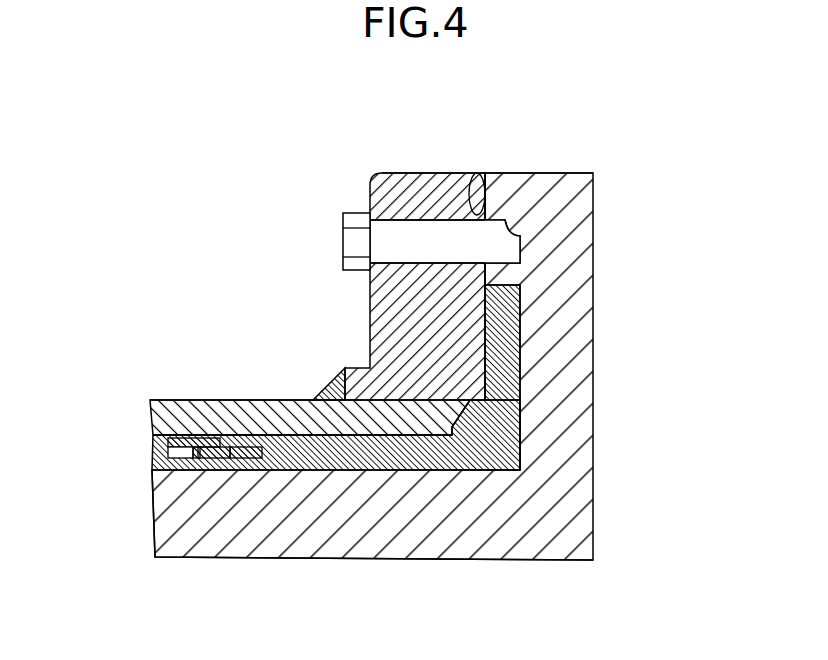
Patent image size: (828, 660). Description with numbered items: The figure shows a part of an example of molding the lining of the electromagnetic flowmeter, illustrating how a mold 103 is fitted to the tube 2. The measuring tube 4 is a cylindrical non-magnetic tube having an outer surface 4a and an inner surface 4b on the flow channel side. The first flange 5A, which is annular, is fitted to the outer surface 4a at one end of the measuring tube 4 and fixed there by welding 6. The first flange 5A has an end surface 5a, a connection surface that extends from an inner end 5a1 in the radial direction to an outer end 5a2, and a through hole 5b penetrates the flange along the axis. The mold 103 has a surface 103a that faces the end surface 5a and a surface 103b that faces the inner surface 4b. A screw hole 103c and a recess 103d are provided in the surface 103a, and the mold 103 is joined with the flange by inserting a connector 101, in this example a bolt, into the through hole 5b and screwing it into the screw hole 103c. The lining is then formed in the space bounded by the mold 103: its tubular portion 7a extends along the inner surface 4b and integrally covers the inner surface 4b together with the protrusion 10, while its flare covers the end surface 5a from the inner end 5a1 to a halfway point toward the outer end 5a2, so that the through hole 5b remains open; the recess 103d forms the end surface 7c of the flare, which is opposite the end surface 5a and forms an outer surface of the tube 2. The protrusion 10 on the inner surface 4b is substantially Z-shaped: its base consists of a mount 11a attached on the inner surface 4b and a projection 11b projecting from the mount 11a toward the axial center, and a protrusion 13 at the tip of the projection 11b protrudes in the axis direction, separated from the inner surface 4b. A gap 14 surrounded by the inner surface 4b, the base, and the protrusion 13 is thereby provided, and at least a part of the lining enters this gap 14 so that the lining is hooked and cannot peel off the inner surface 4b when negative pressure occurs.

The tube 2 is at (428, 173).
The measuring tube 4 is at (290, 401).
The outer surface 4a is at (175, 400).
The inner surface 4b is at (268, 436).
The first flange 5A is at (372, 179).
The end surface 5a is at (489, 182).
The inner end 5a1 is at (480, 403).
The outer end 5a2 is at (497, 194).
The through hole 5b is at (402, 232).
The welding 6 is at (330, 380).
The tubular portion 7a is at (388, 477).
The end surface 7c is at (522, 308).
The protrusion 10 is at (186, 455).
The mount 11a is at (198, 448).
The projection 11b is at (228, 437).
The protrusion 13 is at (233, 448).
The gap 14 is at (271, 450).
The connector 101 is at (343, 240).
The mold 103 is at (555, 173).
The surface 103a is at (471, 172).
The surface 103b is at (525, 472).
The screw hole 103c is at (525, 236).
The recess 103d is at (522, 443).